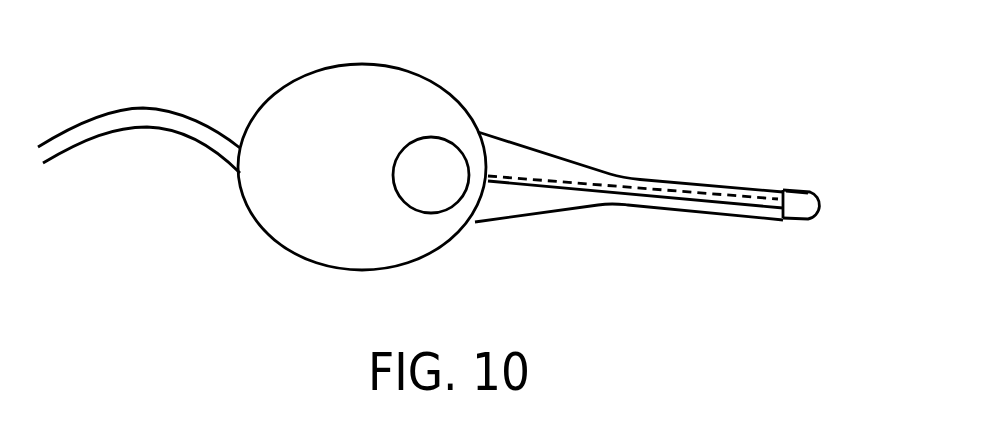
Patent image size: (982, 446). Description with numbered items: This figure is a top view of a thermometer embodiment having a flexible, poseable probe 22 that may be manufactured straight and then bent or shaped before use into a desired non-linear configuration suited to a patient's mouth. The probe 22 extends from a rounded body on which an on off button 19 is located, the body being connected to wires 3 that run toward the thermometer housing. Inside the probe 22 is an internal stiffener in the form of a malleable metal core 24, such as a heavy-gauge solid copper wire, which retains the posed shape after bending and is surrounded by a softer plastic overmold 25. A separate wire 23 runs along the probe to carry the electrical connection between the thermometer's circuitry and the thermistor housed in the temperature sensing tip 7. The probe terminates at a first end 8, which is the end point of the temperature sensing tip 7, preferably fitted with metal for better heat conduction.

The wires 3 is at (142, 112).
The on off button 19 is at (437, 147).
The flexible probe 22 is at (623, 175).
The malleable metal core 24 is at (543, 187).
The wire 23 is at (703, 192).
The plastic overmold 25 is at (665, 183).
The temperature sensing tip 7 is at (803, 216).
The first end 8 is at (811, 179).